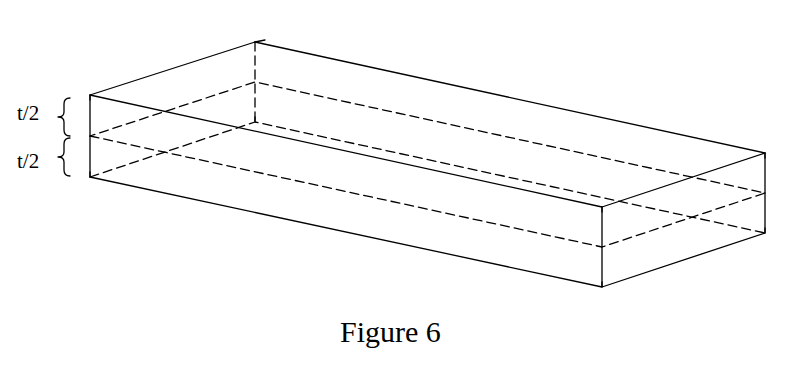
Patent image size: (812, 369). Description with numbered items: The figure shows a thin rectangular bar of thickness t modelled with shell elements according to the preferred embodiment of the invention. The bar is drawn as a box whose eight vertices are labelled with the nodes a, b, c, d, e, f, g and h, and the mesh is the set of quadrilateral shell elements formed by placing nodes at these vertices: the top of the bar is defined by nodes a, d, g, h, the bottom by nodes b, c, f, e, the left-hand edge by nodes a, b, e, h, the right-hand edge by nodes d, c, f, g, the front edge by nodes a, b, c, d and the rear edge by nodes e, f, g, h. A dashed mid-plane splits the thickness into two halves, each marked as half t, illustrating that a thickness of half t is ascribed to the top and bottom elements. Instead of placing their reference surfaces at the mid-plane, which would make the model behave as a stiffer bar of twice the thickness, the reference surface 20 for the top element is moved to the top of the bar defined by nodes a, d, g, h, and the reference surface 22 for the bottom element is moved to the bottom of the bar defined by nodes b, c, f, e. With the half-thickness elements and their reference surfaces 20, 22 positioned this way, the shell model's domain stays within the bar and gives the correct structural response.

The reference surface for element 1 20 is at (458, 95).
The reference surface for element 2 22 is at (375, 224).
The vertex a is at (82, 93).
The vertex b is at (82, 180).
The vertex c is at (599, 298).
The vertex d is at (603, 196).
The vertex e is at (247, 110).
The vertex f is at (773, 236).
The vertex g is at (775, 145).
The vertex h is at (257, 28).